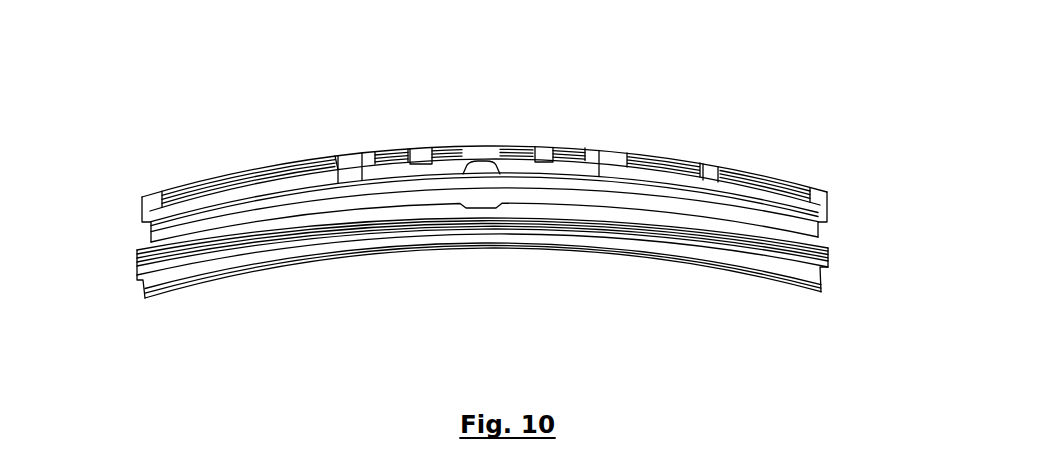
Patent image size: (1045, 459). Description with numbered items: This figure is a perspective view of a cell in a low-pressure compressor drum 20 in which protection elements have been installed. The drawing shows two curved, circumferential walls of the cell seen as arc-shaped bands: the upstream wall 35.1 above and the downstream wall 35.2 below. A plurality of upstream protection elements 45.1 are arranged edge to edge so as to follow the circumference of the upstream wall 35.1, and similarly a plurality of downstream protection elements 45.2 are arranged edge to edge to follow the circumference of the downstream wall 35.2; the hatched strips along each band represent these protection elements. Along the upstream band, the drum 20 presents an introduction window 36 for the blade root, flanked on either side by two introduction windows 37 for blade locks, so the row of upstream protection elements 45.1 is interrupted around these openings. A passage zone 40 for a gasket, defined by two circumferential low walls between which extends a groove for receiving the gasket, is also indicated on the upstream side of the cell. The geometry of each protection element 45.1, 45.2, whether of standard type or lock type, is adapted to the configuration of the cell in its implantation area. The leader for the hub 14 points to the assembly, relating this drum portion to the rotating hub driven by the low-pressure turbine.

The cylindrical hub 14 is at (476, 190).
The compressor drum 20 is at (298, 252).
The upstream wall 35.1 is at (146, 190).
The downstream wall 35.2 is at (136, 255).
The introduction window 36 is at (491, 162).
The introduction windows for blade locks 37 is at (422, 164).
The passage zone 40 is at (663, 160).
The upstream protection elements 45.1 is at (208, 193).
The downstream protection elements 45.2 is at (227, 245).